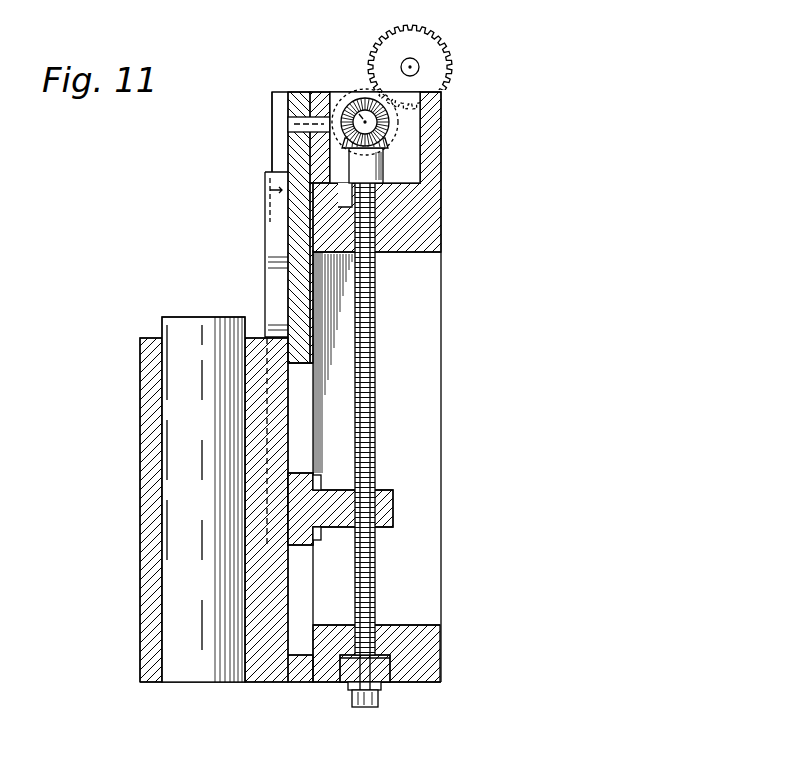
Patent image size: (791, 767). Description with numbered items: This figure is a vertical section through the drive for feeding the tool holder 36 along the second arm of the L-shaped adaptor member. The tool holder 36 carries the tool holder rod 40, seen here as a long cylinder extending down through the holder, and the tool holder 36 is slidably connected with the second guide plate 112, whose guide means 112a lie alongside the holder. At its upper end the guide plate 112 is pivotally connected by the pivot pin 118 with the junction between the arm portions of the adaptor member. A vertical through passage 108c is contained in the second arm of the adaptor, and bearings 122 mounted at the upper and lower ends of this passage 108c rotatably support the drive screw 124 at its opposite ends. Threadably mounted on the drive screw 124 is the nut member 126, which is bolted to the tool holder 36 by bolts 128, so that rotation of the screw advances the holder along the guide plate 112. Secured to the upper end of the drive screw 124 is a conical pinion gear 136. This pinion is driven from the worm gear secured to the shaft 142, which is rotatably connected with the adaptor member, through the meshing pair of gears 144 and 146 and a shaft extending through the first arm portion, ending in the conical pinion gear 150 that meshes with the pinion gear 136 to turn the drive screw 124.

The tool holder 36 is at (140, 540).
The tool holder rod 40 is at (214, 429).
The vertical through passage 108c is at (432, 350).
The second guide plate 112 is at (288, 234).
The guide means 112a is at (272, 281).
The pivot pin 118 is at (288, 126).
The bearings 122 is at (384, 208).
The drive screw 124 is at (375, 416).
The nut member 126 is at (393, 508).
The bolts 128 is at (318, 473).
The conical pinion gear 136 is at (388, 145).
The shaft 142 is at (340, 106).
The gear 144 is at (432, 45).
The gear 146 is at (345, 92).
The conical pinion gear 150 is at (390, 118).